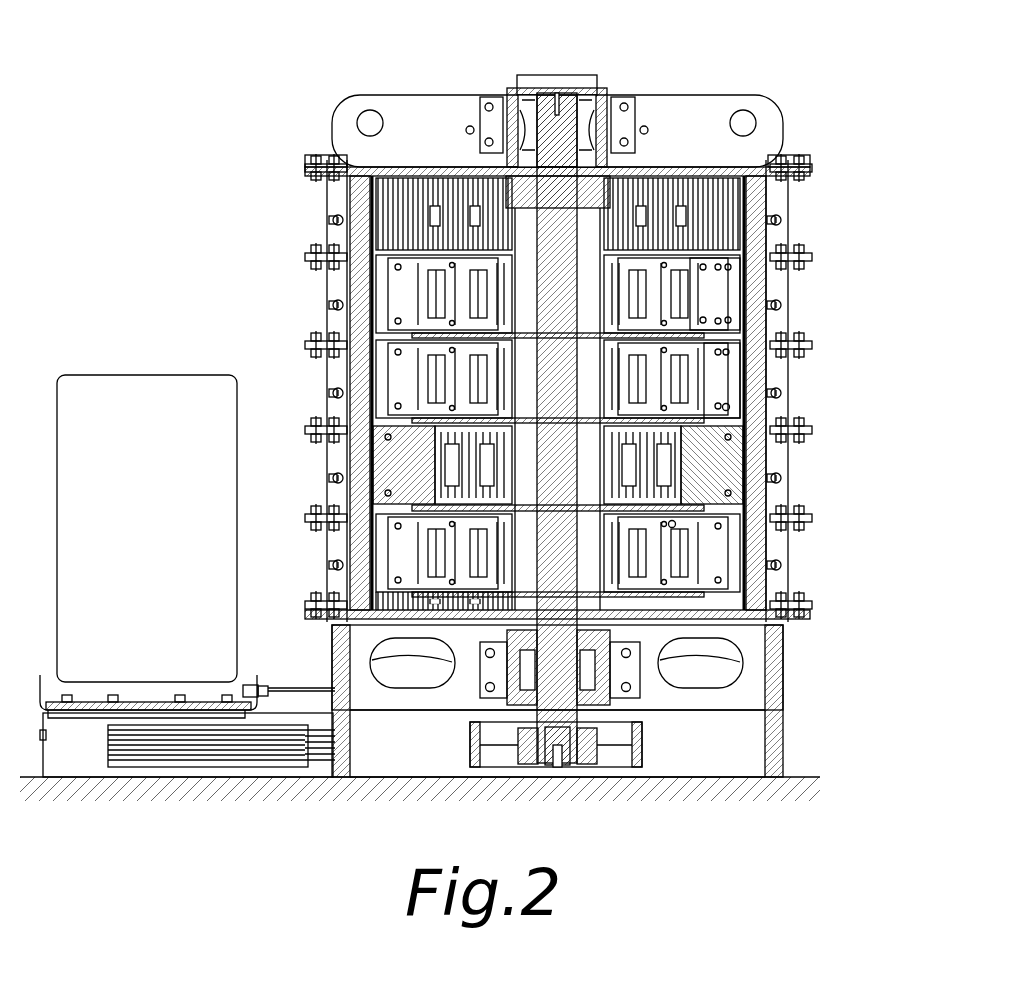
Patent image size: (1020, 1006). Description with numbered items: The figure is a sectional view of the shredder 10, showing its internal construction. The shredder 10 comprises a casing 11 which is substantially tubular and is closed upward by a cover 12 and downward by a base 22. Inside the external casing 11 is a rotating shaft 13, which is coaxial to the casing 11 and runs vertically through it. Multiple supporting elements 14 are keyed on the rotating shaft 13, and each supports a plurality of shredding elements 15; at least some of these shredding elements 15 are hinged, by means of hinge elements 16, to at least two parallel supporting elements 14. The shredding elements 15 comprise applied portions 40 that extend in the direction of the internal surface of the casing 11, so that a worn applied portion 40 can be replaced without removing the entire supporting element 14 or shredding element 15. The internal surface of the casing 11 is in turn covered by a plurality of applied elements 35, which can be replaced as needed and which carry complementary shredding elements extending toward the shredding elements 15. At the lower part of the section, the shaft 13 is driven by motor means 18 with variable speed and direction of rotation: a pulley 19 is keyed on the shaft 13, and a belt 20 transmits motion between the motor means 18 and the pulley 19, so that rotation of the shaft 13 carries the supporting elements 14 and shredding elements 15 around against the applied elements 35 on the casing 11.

The shredder 10 is at (818, 72).
The casing 11 is at (347, 241).
The cover 12 is at (678, 165).
The rotating shaft 13 is at (565, 285).
The supporting element 14 is at (728, 407).
The shredding element 15 is at (705, 368).
The hinge element 16 is at (640, 290).
The motor means 18 is at (187, 546).
The pulley 19 is at (600, 755).
The belt 20 is at (255, 745).
The base 22 is at (735, 615).
The applied element 35 is at (422, 201).
The applied portion 40 is at (720, 282).